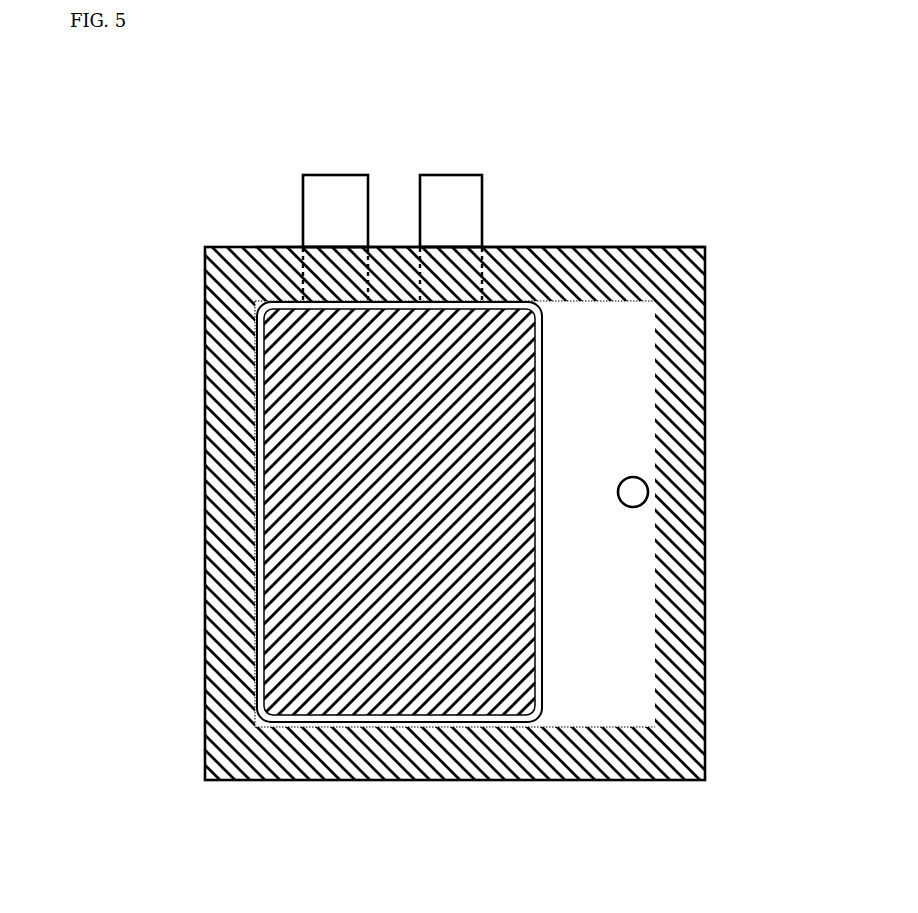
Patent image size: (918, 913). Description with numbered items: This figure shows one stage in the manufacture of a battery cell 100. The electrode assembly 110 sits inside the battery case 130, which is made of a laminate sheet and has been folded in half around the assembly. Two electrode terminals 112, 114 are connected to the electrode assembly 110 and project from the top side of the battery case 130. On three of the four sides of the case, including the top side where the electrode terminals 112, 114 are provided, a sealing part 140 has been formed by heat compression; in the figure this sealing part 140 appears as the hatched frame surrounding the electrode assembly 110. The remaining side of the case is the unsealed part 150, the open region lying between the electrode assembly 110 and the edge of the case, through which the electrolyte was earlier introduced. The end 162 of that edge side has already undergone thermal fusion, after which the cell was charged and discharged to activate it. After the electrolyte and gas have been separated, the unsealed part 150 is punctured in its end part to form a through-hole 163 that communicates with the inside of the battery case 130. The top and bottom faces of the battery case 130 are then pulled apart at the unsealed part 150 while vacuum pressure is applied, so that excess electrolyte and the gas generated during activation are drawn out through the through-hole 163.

The battery cell 100 is at (216, 113).
The electrode assembly 110 is at (285, 433).
The electrode terminal 112 is at (338, 183).
The electrode terminal 114 is at (463, 200).
The battery case 130 is at (205, 500).
The sealing part 140 is at (553, 248).
The unsealed part 150 is at (613, 352).
The end of edge side 162 is at (690, 418).
The through-hole 163 is at (647, 484).